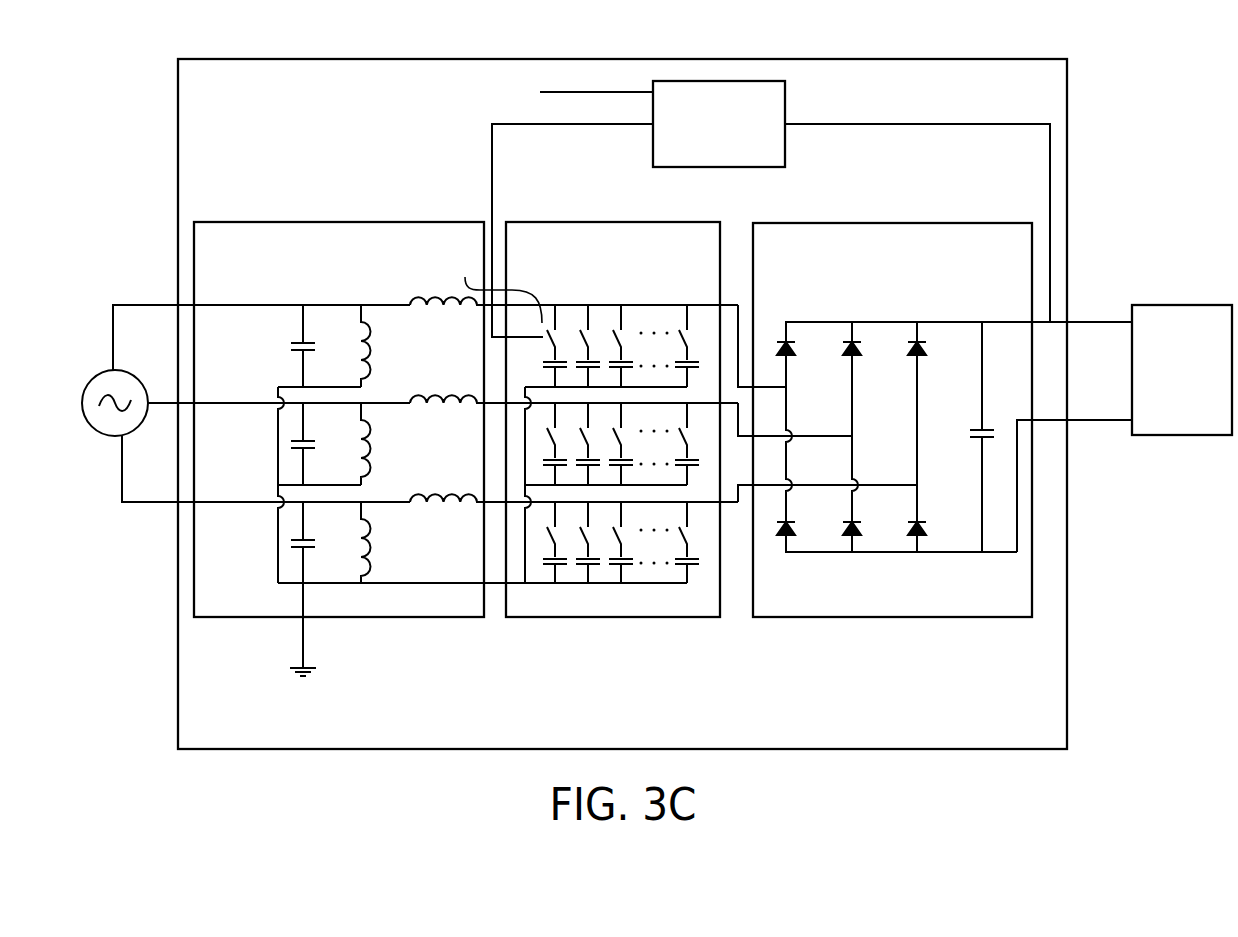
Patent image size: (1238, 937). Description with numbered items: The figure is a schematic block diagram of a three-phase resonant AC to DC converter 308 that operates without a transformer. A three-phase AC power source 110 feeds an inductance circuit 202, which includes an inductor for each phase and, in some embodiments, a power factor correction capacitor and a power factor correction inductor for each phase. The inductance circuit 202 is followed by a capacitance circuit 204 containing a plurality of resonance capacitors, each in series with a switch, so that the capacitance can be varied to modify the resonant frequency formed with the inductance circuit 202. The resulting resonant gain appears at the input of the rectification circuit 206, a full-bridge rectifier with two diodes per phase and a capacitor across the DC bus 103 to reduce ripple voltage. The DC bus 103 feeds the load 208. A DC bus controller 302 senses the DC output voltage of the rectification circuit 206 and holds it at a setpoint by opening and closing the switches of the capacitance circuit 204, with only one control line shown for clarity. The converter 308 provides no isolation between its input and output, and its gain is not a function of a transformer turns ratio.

The DC bus 103 is at (1093, 421).
The AC power source 110 is at (242, 403).
The inductance circuit 202 is at (320, 279).
The capacitance circuit 204 is at (595, 281).
The rectification circuit 206 is at (874, 281).
The load 208 is at (1163, 396).
The DC bus controller 302 is at (701, 162).
The three-phase resonant AC to DC converter 308 is at (604, 742).